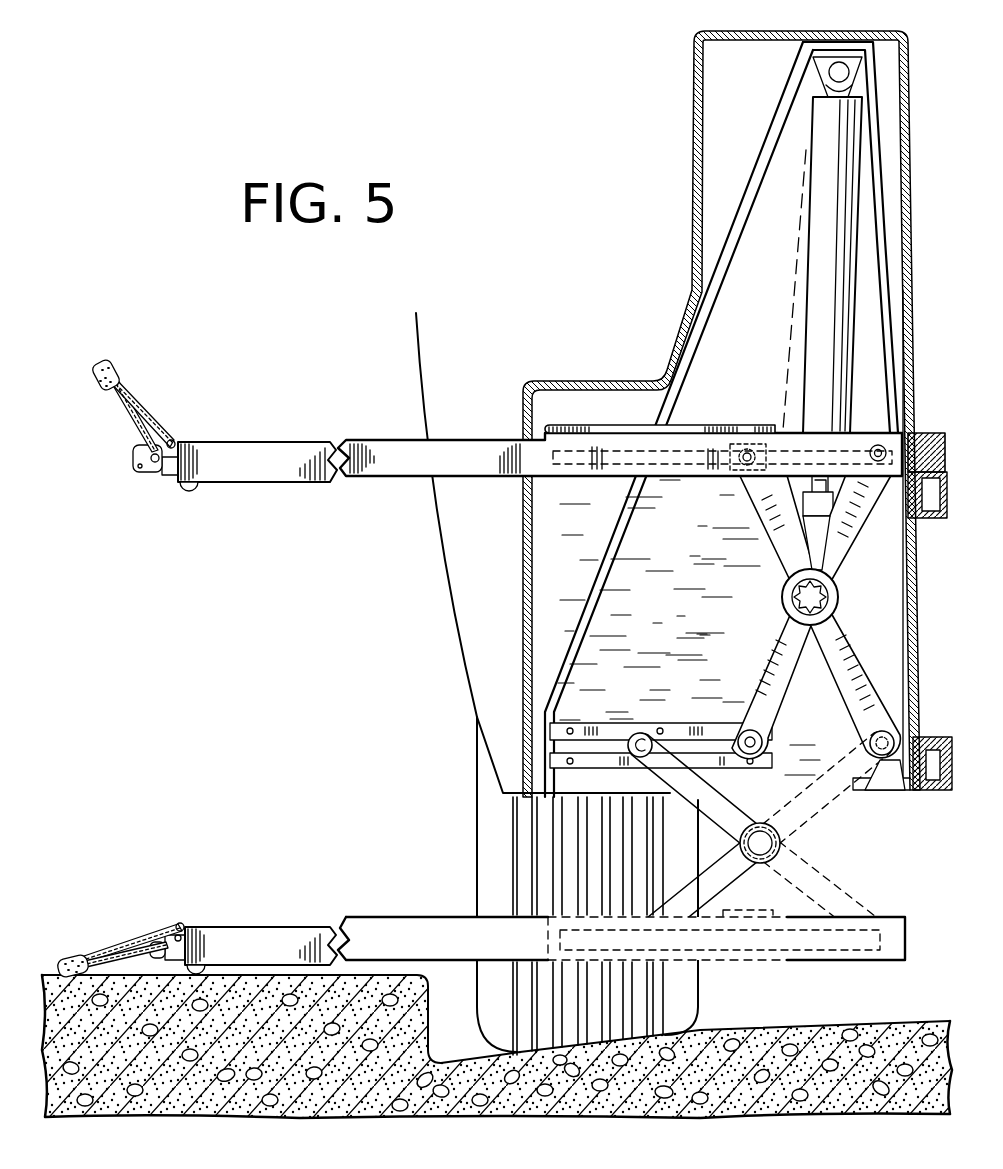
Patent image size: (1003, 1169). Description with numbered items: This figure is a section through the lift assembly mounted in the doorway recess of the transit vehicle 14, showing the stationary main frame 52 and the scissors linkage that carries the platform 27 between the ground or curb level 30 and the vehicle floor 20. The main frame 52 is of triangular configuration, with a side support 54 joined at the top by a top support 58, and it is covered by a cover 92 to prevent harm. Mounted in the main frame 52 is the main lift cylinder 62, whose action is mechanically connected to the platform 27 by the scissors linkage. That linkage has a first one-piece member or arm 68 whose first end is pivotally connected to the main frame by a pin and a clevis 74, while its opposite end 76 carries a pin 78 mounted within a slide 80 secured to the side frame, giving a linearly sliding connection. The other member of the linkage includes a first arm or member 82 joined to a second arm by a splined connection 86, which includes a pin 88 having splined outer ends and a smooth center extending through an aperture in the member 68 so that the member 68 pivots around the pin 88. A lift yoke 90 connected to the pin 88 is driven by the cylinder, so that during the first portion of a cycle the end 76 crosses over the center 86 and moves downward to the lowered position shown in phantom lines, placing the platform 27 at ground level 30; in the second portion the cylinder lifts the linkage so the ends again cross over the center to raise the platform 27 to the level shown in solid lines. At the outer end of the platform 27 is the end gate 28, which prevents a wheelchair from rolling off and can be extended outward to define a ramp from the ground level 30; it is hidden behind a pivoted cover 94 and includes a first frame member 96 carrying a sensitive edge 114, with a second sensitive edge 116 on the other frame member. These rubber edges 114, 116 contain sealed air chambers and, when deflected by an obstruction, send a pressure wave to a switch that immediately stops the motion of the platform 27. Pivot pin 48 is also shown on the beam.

The transit vehicle 14 is at (453, 614).
The floor 20 is at (922, 432).
The platform 27 is at (352, 437).
The end gate 28 is at (126, 601).
The ground or curb level 30 is at (432, 978).
The pivot pin 48 is at (878, 445).
The main frame 52 is at (778, 84).
The side support 54 is at (770, 133).
The top support 58 is at (868, 50).
The main lift cylinder 62 is at (822, 263).
The first one-piece member or arm 68 is at (858, 710).
The clevis 74 is at (893, 733).
The opposite end of member 76 is at (763, 515).
The pin 78 is at (745, 442).
The slide 80 is at (632, 462).
The first arm or member 82 is at (850, 525).
The splined connection 86 is at (822, 598).
The pin 88 is at (612, 722).
The lift yoke 90 is at (785, 548).
The cover 92 is at (692, 188).
The pivoted cover 94 is at (158, 412).
The first frame member 96 is at (133, 430).
The sensitive edge 114 is at (104, 345).
The sensitive edge 116 is at (189, 494).